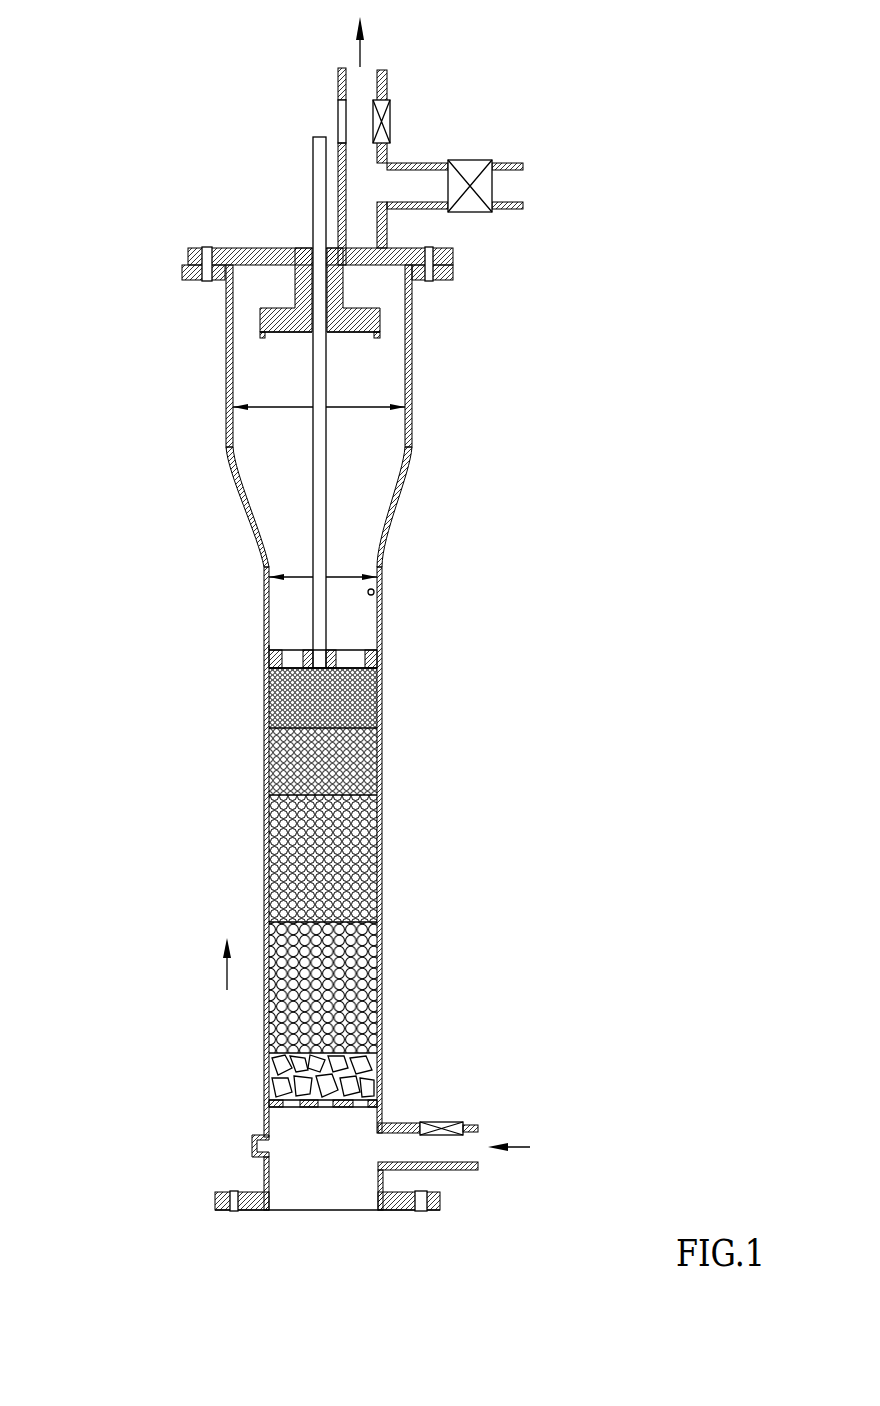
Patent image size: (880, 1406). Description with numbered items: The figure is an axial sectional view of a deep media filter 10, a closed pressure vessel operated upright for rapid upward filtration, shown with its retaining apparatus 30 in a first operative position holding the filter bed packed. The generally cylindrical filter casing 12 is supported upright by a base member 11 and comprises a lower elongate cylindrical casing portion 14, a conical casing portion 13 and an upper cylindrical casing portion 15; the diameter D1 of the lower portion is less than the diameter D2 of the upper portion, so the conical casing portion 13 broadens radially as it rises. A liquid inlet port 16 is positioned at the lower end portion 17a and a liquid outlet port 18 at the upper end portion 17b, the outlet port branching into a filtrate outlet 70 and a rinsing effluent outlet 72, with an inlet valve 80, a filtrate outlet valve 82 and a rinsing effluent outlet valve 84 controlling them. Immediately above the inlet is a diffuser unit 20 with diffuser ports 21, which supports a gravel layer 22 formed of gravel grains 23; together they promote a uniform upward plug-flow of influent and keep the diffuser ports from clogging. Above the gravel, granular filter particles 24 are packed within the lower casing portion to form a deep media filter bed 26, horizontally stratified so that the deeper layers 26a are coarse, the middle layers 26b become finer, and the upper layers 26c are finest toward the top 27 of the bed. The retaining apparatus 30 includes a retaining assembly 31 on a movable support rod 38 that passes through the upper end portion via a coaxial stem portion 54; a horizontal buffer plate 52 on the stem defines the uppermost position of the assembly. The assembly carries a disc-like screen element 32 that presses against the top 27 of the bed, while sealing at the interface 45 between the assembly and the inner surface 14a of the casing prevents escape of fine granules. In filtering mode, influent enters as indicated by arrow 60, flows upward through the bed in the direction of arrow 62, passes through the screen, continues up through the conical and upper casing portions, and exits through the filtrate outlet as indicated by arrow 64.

The deep media filter 10 is at (135, 68).
The base member 11 is at (437, 1210).
The filter casing 12 is at (228, 455).
The conical casing portion 13 is at (395, 500).
The lower elongate cylindrical casing portion 14 is at (385, 612).
The inner surface of casing portion 14a is at (375, 592).
The upper cylindrical casing portion 15 is at (412, 390).
The liquid inlet port 16 is at (385, 1148).
The lower end portion 17a is at (267, 1178).
The upper end portion 17b is at (187, 256).
The liquid outlet port 18 is at (345, 260).
The diffuser unit 20 is at (273, 1100).
The diffuser ports 21 is at (294, 1112).
The gravel layer 22 is at (256, 1050).
The gravel grains 23 is at (370, 1088).
The granular filter particles 24 is at (264, 860).
The deep media filter bed 26 is at (490, 668).
The deeper layers of filter bed 26a is at (400, 923).
The middle layers of filter bed 26b is at (400, 793).
The upper layers of filter bed 26c is at (400, 668).
The top of filter bed 27 is at (267, 660).
The retaining apparatus 30 is at (290, 147).
The retaining assembly 31 is at (255, 658).
The screen element 32 is at (355, 668).
The support rod 38 is at (313, 180).
The interface 45 is at (276, 644).
The buffer plate 52 is at (258, 336).
The stem portion 54 is at (295, 287).
The arrow indicating influent introduction 60 is at (515, 1147).
The arrow indicating influent flow direction 62 is at (227, 975).
The arrow indicating filtrate exit 64 is at (362, 50).
The filtrate outlet 70 is at (388, 82).
The rinsing effluent outlet 72 is at (505, 163).
The inlet valve 80 is at (445, 1122).
The filtrate outlet valve 82 is at (392, 118).
The rinsing effluent outlet valve 84 is at (470, 212).
The diameter of lower casing portion D1 is at (323, 594).
The diameter of upper casing portion D2 is at (319, 422).